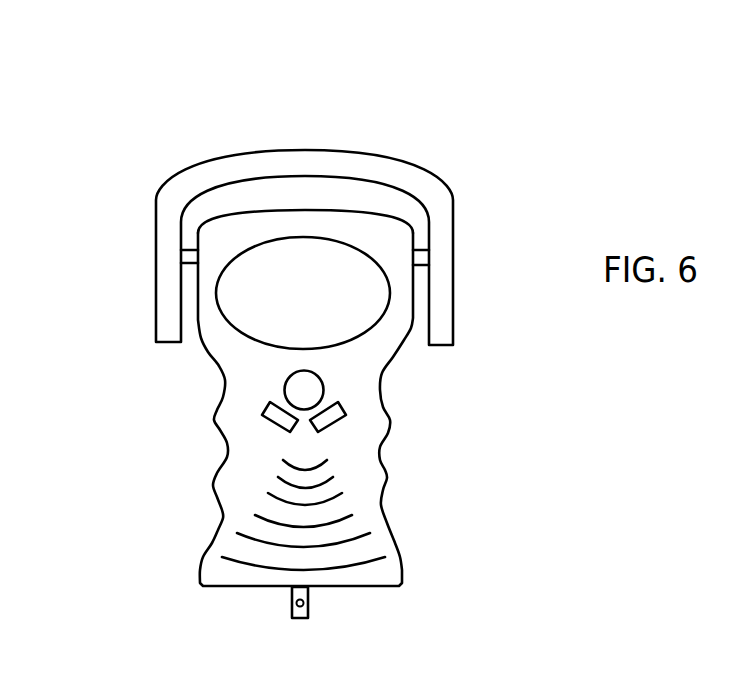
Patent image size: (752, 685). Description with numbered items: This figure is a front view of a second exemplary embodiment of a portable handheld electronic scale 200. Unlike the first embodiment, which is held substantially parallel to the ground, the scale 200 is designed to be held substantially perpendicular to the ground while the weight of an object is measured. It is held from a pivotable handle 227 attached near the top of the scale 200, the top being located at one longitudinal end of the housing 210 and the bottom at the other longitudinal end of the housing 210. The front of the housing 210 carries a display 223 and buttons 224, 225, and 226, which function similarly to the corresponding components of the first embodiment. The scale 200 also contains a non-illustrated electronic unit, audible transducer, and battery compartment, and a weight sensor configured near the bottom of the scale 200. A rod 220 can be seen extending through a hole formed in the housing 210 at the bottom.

The handheld scale 200 is at (173, 130).
The housing 210 is at (402, 563).
The rod 220 is at (292, 610).
The display 223 is at (345, 297).
The button 224 is at (327, 418).
The button 225 is at (271, 418).
The button 226 is at (304, 389).
The pivotable handle 227 is at (405, 157).